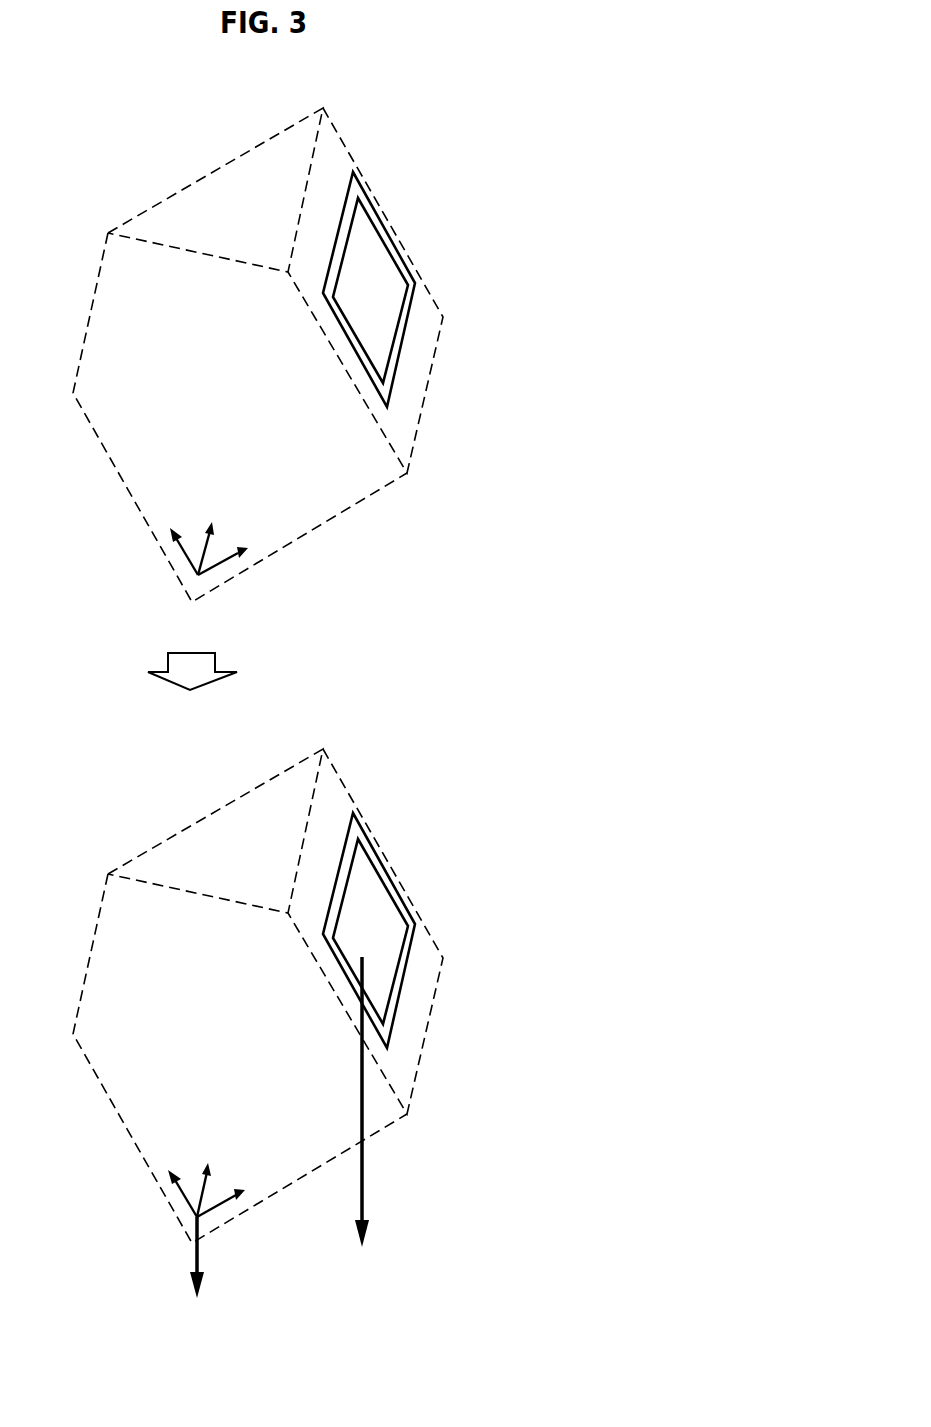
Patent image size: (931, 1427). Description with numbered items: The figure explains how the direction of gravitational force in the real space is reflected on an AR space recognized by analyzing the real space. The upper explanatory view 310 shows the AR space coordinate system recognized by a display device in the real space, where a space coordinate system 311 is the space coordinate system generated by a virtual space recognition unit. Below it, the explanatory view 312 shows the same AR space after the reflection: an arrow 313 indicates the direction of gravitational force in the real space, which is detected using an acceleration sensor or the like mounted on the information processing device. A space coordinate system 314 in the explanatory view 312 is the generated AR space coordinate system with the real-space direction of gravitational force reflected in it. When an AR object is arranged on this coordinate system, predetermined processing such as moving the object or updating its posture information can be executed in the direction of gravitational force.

The explanatory view 310 is at (514, 118).
The space coordinate system 311 is at (187, 553).
The explanatory view 312 is at (514, 759).
The arrow 313 is at (364, 1163).
The space coordinate system 314 is at (182, 1197).